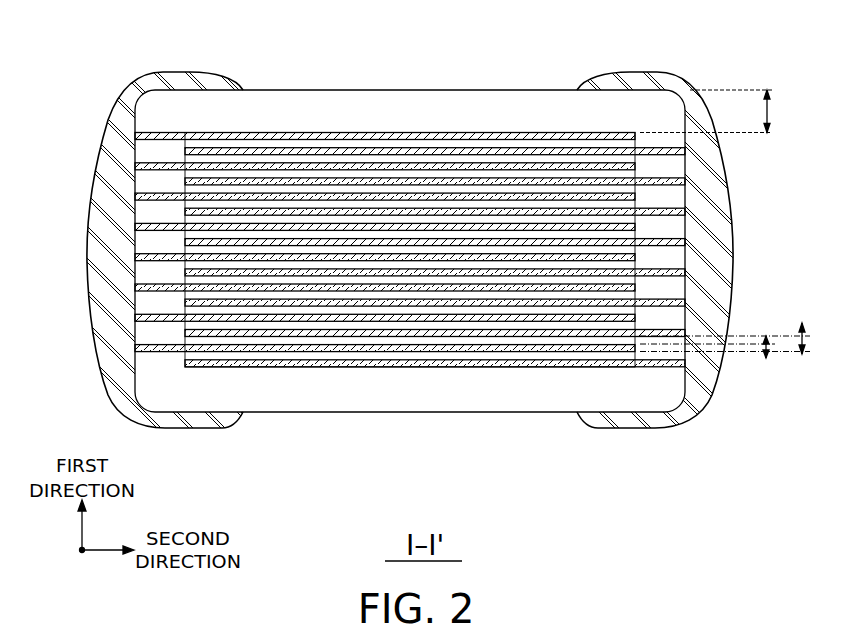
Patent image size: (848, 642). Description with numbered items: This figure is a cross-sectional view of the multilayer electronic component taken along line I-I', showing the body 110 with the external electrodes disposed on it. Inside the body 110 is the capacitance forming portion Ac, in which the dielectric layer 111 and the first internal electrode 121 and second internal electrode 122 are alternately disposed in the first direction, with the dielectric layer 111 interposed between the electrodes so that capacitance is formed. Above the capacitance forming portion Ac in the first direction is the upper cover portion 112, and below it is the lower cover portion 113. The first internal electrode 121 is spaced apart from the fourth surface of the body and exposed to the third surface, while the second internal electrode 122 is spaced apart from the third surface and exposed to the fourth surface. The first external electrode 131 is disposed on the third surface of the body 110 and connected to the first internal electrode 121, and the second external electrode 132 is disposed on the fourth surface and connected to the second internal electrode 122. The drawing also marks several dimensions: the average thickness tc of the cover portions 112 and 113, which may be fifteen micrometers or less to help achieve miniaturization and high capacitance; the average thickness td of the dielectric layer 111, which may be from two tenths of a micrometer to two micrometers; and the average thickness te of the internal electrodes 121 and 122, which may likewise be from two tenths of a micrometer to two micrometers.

The body 110 is at (357, 90).
The dielectric layer 111 is at (300, 158).
The upper cover portion 112 is at (413, 102).
The lower cover portion 113 is at (378, 407).
The first internal electrode 121 is at (483, 135).
The second internal electrode 122 is at (505, 153).
The first external electrode 131 is at (90, 228).
The second external electrode 132 is at (736, 231).
The capacitance forming portion Ac is at (460, 370).
The average thickness of the cover portions tc is at (715, 111).
The average thickness of the dielectric layer td is at (734, 339).
The average thickness of the internal electrodes te is at (715, 353).